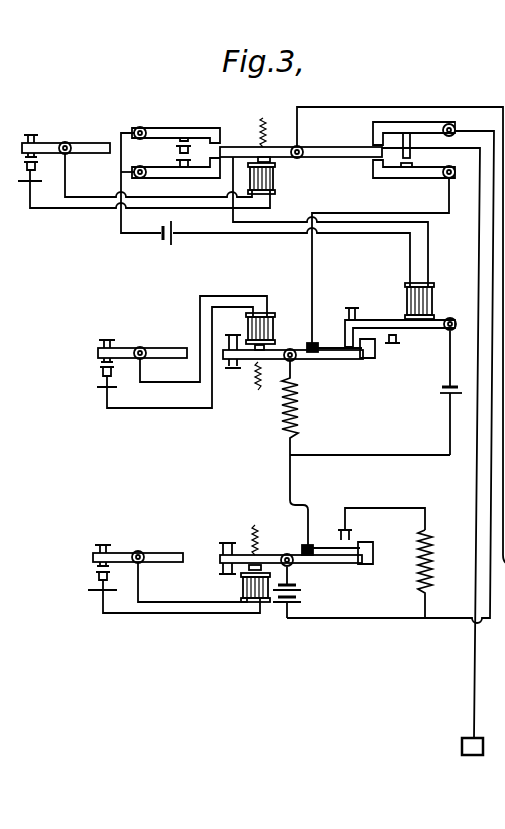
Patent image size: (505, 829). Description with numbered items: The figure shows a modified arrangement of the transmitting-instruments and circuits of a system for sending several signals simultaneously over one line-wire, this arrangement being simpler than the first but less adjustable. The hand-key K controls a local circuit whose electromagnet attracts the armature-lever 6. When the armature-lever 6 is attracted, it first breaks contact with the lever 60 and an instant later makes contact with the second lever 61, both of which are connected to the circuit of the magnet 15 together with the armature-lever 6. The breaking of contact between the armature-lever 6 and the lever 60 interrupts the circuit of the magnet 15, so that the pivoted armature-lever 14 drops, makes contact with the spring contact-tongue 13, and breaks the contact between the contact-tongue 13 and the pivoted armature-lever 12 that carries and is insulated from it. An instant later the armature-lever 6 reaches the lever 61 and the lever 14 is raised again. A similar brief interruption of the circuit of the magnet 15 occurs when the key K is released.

The hand-key K is at (64, 148).
The lever 60 is at (167, 130).
The second lever 61 is at (197, 178).
The armature-lever 6 is at (334, 152).
The pivoted armature-lever 12 is at (322, 361).
The spring contact-tongue 13 is at (347, 355).
The pivoted armature-lever 14 is at (382, 321).
The magnet 15 is at (433, 300).